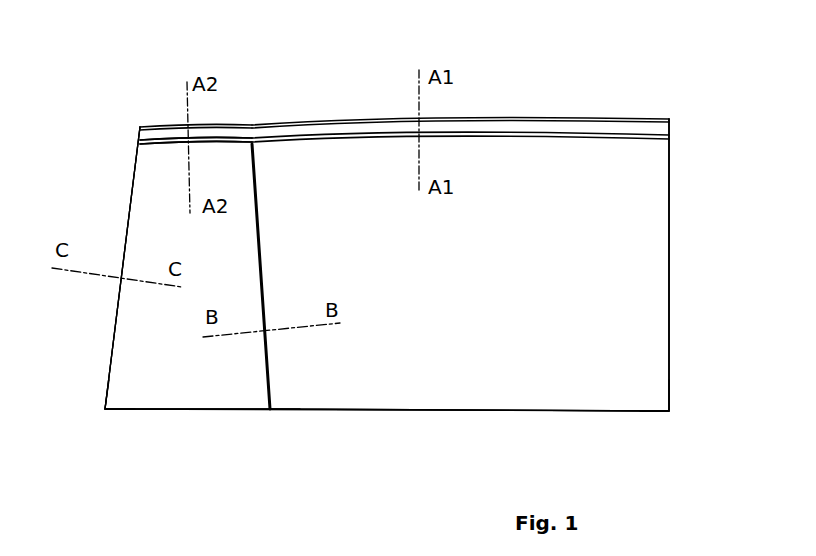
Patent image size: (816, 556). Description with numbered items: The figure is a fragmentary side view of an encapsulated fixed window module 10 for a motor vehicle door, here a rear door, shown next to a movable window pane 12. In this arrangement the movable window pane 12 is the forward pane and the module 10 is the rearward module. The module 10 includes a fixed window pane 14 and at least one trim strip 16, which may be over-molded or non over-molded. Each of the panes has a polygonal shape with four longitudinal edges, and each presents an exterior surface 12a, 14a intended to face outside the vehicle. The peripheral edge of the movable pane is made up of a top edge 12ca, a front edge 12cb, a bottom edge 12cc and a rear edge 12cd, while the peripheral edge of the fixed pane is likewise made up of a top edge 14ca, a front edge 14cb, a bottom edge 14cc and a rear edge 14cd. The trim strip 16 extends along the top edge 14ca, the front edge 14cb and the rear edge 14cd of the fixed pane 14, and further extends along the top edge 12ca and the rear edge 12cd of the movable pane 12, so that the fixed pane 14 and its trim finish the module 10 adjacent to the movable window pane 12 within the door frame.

The encapsulated fixed window module 10 is at (271, 112).
The movable window pane 12 is at (643, 293).
The exterior surface 12a is at (472, 392).
The top edge 12ca is at (533, 135).
The front edge 12cb is at (670, 238).
The bottom edge 12cc is at (566, 411).
The rear edge 12cd is at (272, 391).
The fixed window pane 14 is at (160, 388).
The exterior surface 14a is at (220, 390).
The top edge 14ca is at (162, 140).
The front edge 14cb is at (257, 183).
The bottom edge 14cc is at (127, 410).
The rear edge 14cd is at (110, 356).
The trim strip 16 is at (257, 255).